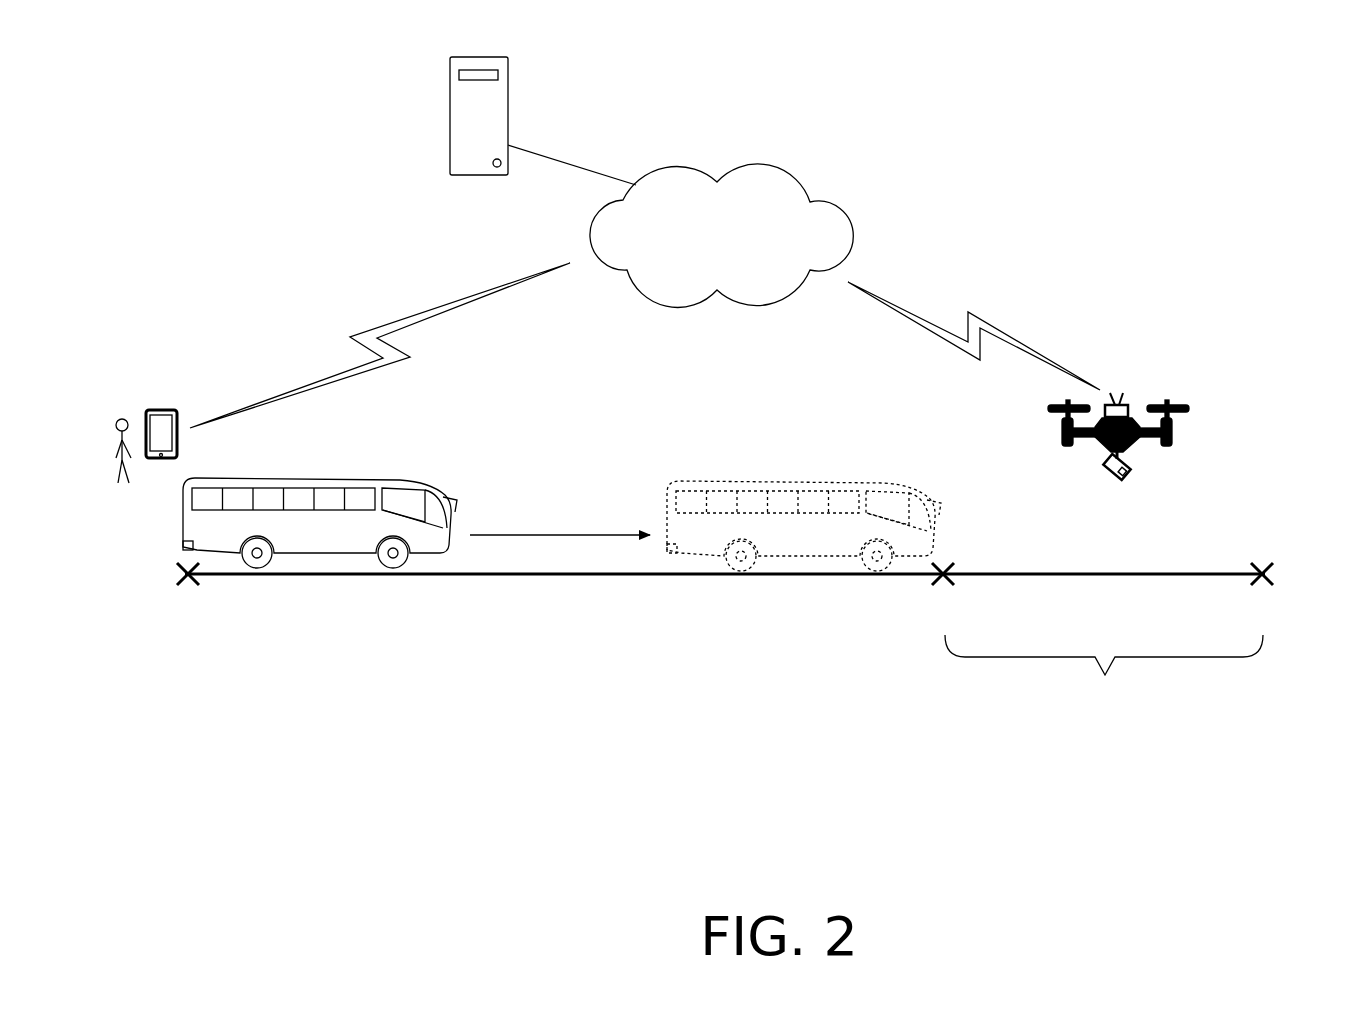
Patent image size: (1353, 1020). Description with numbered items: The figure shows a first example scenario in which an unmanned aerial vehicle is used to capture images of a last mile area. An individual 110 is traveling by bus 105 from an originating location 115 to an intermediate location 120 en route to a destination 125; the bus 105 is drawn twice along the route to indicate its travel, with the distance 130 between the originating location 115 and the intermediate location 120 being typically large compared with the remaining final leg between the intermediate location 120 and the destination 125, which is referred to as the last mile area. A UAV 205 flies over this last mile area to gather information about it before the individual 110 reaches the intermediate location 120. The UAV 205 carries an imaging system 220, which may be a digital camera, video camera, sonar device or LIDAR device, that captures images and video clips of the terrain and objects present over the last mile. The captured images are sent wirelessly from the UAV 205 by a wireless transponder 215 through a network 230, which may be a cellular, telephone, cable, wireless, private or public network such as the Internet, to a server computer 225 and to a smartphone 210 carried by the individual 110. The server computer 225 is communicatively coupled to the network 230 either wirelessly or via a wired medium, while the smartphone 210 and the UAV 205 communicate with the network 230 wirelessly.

The bus 105 is at (390, 468).
The individual 110 is at (116, 408).
The originating location 115 is at (192, 596).
The intermediate location 120 is at (945, 594).
The destination 125 is at (1262, 594).
The distance 130 is at (1104, 670).
The unmanned aerial vehicle (UAV) 205 is at (1146, 398).
The smartphone 210 is at (159, 410).
The wireless transponder 215 is at (1132, 387).
The imaging system 220 is at (1144, 467).
The server computer 225 is at (519, 91).
The network 230 is at (721, 235).